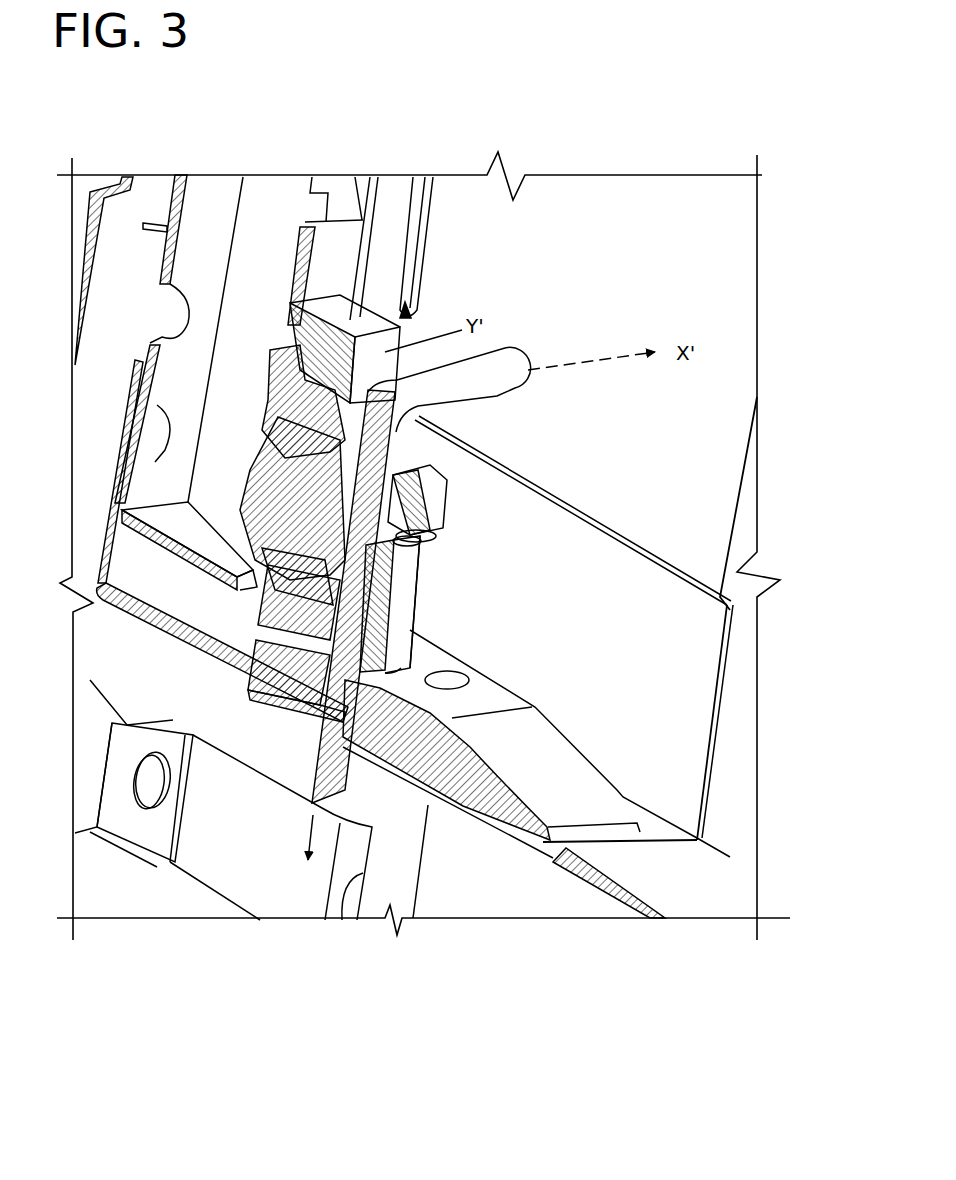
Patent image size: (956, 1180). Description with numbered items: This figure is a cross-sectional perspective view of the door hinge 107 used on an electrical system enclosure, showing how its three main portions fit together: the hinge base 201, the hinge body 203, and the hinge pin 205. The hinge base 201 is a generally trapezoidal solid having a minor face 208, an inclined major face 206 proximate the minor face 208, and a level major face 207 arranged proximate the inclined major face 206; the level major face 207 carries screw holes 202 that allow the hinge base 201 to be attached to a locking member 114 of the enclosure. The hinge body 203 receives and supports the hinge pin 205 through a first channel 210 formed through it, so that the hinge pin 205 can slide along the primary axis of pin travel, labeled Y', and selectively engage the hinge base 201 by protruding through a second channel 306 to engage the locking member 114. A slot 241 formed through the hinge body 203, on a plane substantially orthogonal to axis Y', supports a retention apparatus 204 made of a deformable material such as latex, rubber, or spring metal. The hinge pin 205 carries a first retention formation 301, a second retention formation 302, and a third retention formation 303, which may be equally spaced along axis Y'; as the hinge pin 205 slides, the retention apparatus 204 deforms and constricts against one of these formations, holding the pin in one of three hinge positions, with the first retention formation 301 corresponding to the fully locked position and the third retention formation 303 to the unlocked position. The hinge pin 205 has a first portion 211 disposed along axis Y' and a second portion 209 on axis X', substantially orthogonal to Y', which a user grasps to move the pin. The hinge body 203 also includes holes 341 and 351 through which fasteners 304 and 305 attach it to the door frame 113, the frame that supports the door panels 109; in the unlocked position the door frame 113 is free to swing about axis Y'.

The door hinge 107 is at (510, 330).
The door panel 109 is at (390, 236).
The door frame 113 is at (202, 560).
The locking member 114 is at (626, 653).
The hinge base 201 is at (466, 767).
The screw holes 202 is at (455, 678).
The hinge body 203 is at (407, 585).
The retention apparatus 204 is at (398, 532).
The hinge pin 205 is at (497, 391).
The inclined major face 206 is at (546, 769).
The level major face 207 is at (500, 711).
The minor face 208 is at (603, 825).
The second portion 209 is at (493, 405).
The first channel 210 is at (365, 603).
The first portion 211 is at (417, 448).
The slot 241 is at (430, 547).
The first retention formation 301 is at (393, 477).
The second retention formation 302 is at (353, 614).
The third retention formation 303 is at (330, 712).
The fastener 304 is at (303, 410).
The fastener 305 is at (277, 520).
The second channel 306 is at (313, 687).
The hole 341 is at (353, 398).
The hole 351 is at (317, 568).